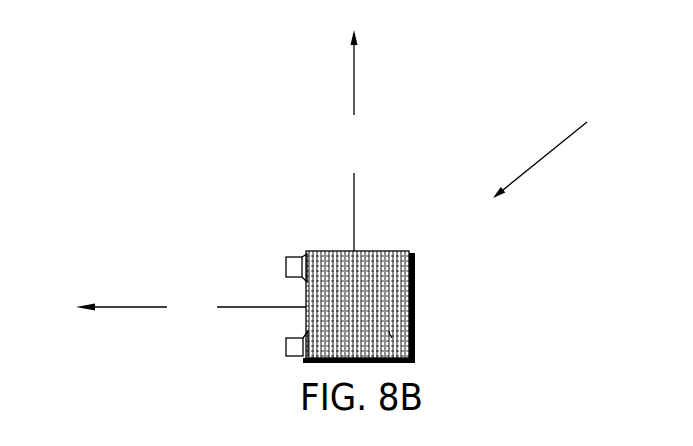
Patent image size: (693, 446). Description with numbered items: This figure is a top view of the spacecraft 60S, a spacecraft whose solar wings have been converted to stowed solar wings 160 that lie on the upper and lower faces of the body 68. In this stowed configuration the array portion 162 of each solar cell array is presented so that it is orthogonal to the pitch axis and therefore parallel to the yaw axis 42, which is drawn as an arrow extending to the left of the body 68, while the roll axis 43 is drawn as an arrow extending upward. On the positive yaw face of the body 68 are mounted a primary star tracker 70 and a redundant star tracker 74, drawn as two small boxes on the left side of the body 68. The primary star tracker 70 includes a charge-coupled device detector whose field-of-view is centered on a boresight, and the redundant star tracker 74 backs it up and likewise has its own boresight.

The spacecraft 60S is at (560, 147).
The body 68 is at (414, 289).
The primary star tracker 70 is at (295, 254).
The redundant star tracker 74 is at (288, 357).
The stowed solar wing 160 is at (383, 263).
The array portion 162 is at (389, 331).
The roll axis 43 is at (355, 140).
The yaw axis 42 is at (191, 306).